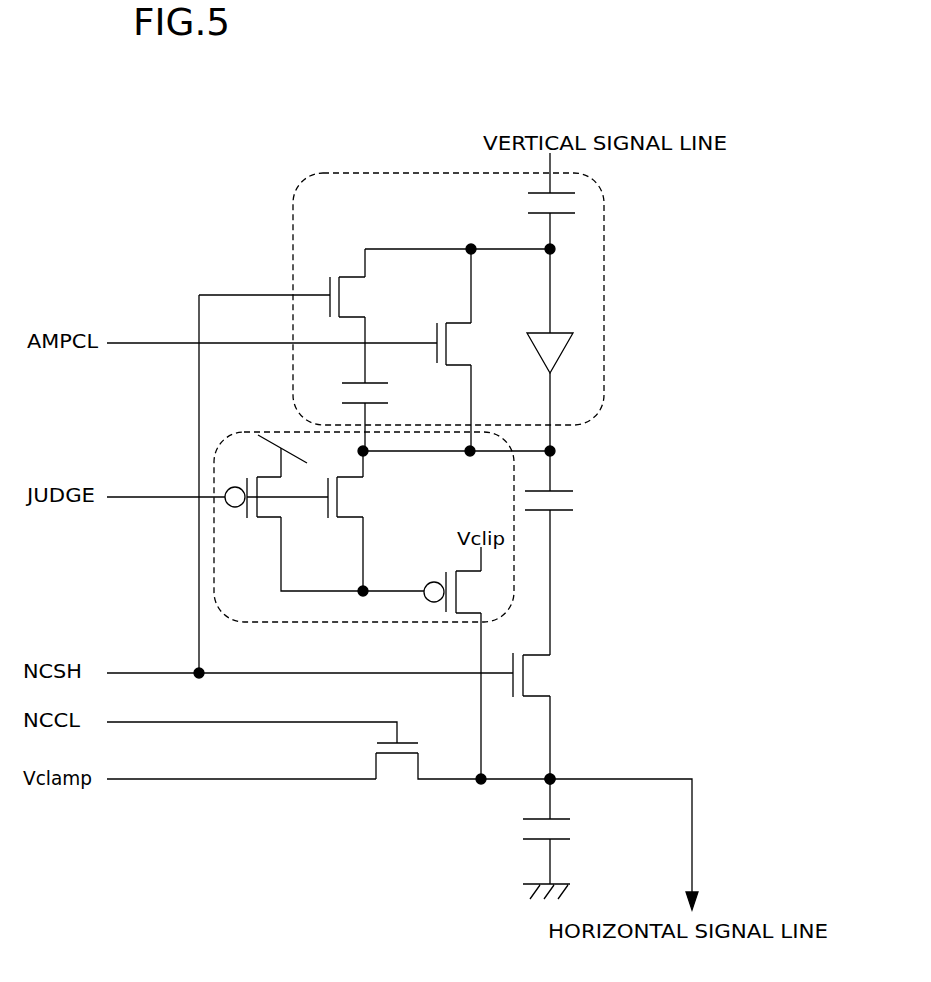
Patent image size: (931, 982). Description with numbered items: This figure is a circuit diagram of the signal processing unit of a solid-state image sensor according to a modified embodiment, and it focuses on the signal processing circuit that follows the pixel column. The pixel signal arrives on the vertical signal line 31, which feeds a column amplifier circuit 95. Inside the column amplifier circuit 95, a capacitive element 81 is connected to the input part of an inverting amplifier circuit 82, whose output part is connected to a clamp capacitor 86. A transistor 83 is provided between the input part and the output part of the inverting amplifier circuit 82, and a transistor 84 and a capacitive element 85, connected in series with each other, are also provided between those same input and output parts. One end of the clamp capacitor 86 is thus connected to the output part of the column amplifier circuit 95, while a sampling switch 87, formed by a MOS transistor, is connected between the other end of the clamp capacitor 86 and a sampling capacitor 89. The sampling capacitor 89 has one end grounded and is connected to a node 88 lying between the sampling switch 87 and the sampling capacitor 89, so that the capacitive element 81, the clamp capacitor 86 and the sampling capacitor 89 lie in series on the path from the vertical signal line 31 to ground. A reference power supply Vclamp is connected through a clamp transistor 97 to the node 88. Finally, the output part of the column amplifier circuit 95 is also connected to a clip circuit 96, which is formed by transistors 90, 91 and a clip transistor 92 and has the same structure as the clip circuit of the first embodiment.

The vertical signal line 31 is at (525, 144).
The capacitive element 81 is at (527, 203).
The inverting amplifier circuit 82 is at (566, 352).
The transistor 83 is at (437, 323).
The transistor 84 is at (330, 277).
The capacitive element 85 is at (342, 393).
The clamp capacitor 86 is at (573, 500).
The sampling switch 87 is at (548, 677).
The node 88 is at (552, 774).
The sampling capacitor 89 is at (568, 818).
The transistor 90 is at (233, 484).
The transistor 91 is at (328, 518).
The clip transistor 92 is at (446, 572).
The column amplifier circuit 95 is at (603, 297).
The clip circuit 96 is at (514, 588).
The clamp transistor 97 is at (418, 742).